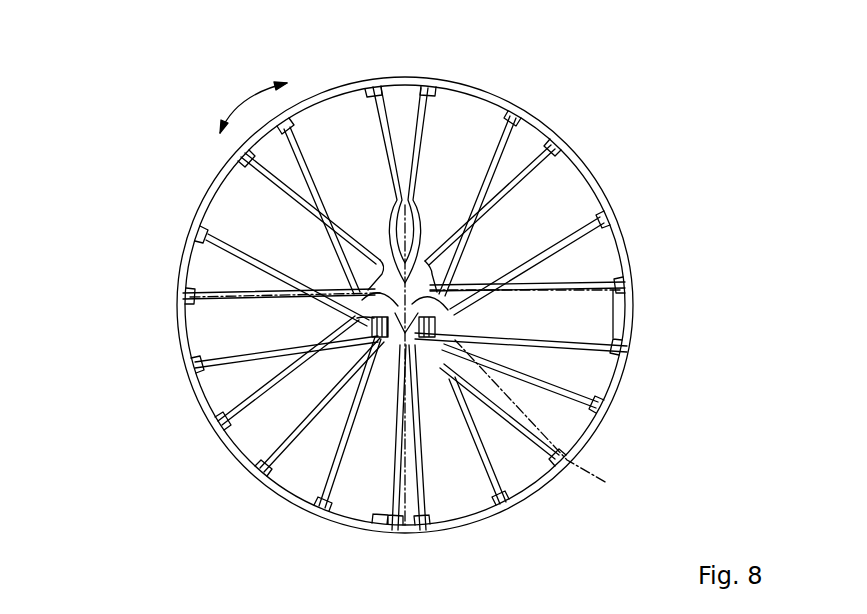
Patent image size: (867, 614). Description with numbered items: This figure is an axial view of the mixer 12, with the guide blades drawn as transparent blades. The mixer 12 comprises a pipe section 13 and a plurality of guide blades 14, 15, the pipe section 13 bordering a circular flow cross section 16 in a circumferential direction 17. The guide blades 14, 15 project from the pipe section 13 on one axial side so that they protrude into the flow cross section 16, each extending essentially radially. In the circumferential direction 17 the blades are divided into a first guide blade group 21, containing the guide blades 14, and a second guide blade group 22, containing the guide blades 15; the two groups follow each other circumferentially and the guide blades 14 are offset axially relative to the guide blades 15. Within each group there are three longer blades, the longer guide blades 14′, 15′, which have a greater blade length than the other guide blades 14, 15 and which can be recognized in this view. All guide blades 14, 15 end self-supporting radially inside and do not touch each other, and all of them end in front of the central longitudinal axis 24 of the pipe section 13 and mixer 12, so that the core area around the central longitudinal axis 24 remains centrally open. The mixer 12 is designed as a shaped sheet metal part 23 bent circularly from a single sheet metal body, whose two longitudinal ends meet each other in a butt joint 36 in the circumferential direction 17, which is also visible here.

The mixer 12 is at (668, 133).
The pipe section 13 is at (623, 240).
The guide blade 14 is at (537, 203).
The longer guide blade 14′ is at (460, 130).
The guide blade 15 is at (250, 217).
The longer guide blade 15′ is at (347, 130).
The flow cross section 16 is at (527, 463).
The circumferential direction 17 is at (248, 105).
The first guide blade group 21 is at (662, 282).
The second guide blade group 22 is at (150, 282).
The shaped sheet metal part 23 is at (620, 387).
The central longitudinal axis 24 is at (544, 421).
The butt joint 36 is at (420, 537).